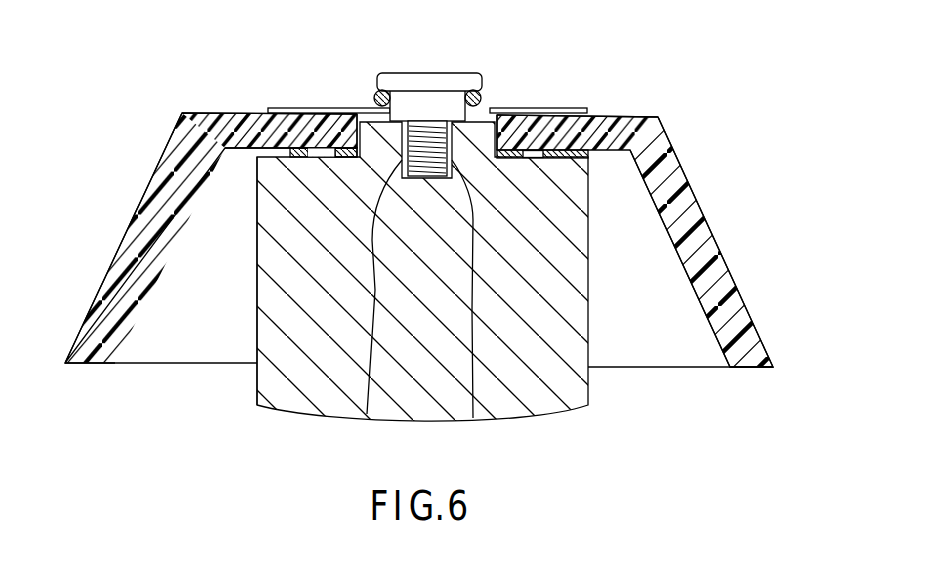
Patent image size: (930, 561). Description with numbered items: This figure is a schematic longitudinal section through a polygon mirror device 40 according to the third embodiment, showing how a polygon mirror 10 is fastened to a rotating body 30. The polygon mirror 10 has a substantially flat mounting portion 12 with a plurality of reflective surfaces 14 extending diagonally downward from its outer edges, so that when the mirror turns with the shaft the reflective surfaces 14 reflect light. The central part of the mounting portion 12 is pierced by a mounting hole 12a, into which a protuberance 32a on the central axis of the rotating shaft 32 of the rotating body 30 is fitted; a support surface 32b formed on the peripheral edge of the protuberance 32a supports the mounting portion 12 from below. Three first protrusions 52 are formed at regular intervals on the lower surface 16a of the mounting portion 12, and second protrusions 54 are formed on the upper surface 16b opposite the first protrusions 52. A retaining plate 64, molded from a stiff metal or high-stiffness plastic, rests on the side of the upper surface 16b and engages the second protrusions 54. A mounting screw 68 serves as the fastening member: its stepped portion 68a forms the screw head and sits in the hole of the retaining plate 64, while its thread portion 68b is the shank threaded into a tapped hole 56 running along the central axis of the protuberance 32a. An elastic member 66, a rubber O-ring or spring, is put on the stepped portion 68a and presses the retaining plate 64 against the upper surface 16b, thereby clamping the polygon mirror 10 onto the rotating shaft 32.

The polygon mirror 10 is at (711, 208).
The mounting portion 12 is at (618, 117).
The mounting hole 12a is at (496, 120).
The reflective surfaces 14 is at (740, 284).
The lower surface 16a is at (240, 148).
The upper surface 16b is at (212, 113).
The rotating body 30 is at (255, 342).
The rotating shaft 32 is at (583, 330).
The protuberance 32a is at (364, 125).
The support surface 32b is at (296, 148).
The polygon mirror device 40 is at (672, 112).
The first protrusions 52 is at (583, 152).
The second protrusions 54 is at (574, 115).
The tapped hole 56 is at (367, 414).
The retaining plate 64 is at (537, 109).
The elastic member 66 is at (478, 92).
The mounting screw 68 is at (426, 100).
The stepped portion 68a is at (392, 73).
The thread portion 68b is at (474, 418).